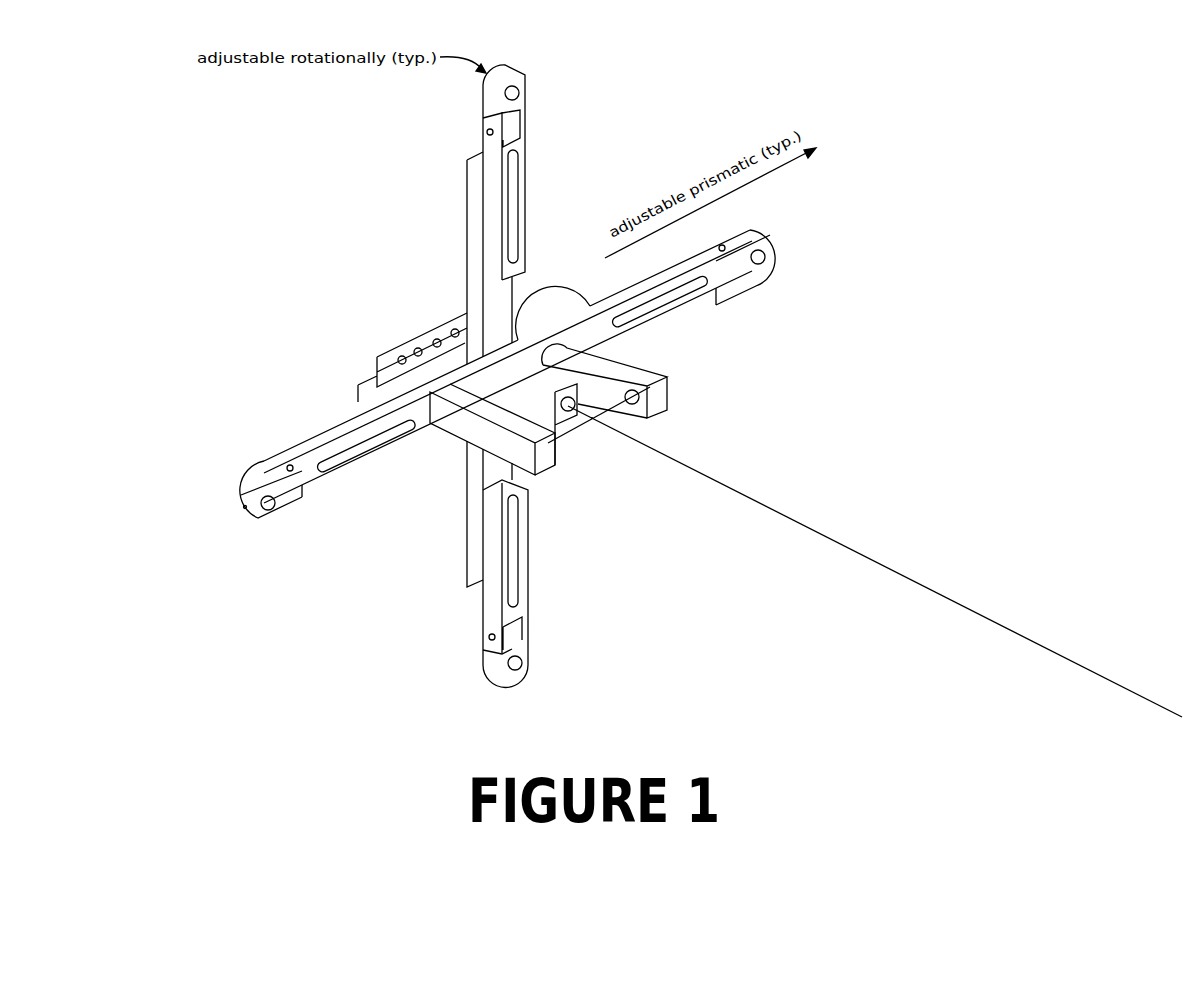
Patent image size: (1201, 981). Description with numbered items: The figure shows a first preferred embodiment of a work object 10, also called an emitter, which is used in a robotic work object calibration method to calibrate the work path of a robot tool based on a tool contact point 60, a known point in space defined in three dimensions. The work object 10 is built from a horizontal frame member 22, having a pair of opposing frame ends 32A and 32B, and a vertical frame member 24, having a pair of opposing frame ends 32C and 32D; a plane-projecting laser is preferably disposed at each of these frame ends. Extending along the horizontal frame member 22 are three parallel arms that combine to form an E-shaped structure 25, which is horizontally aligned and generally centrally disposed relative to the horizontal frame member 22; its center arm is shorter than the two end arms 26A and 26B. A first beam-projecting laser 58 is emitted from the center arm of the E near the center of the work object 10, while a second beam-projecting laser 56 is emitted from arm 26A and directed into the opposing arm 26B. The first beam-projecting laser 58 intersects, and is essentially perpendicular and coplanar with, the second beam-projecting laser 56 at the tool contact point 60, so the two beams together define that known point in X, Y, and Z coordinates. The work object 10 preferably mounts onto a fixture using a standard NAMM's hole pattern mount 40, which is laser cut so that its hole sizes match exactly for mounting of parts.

The work object 10 is at (447, 280).
The NAMM's hole pattern mount 40 is at (422, 335).
The vertical frame member 24 is at (500, 170).
The horizontal frame member 22 is at (686, 302).
The E-shaped structure 25 is at (660, 397).
The arm 26A is at (510, 452).
The arm 26B is at (641, 360).
The frame end 32A is at (266, 519).
The frame end 32B is at (770, 241).
The frame end 32C is at (527, 87).
The frame end 32D is at (516, 682).
The second beam-projecting laser 56 is at (568, 437).
The first beam-projecting laser 58 is at (848, 558).
The tool contact point 60 is at (598, 418).